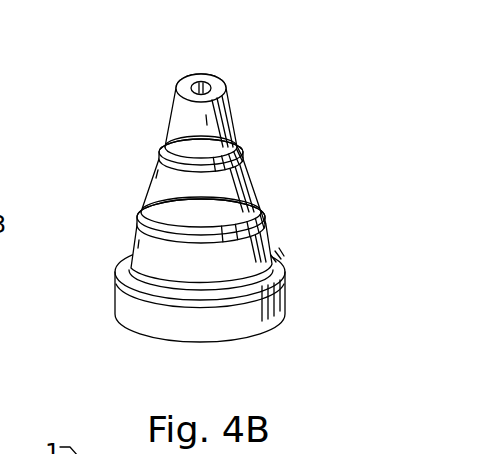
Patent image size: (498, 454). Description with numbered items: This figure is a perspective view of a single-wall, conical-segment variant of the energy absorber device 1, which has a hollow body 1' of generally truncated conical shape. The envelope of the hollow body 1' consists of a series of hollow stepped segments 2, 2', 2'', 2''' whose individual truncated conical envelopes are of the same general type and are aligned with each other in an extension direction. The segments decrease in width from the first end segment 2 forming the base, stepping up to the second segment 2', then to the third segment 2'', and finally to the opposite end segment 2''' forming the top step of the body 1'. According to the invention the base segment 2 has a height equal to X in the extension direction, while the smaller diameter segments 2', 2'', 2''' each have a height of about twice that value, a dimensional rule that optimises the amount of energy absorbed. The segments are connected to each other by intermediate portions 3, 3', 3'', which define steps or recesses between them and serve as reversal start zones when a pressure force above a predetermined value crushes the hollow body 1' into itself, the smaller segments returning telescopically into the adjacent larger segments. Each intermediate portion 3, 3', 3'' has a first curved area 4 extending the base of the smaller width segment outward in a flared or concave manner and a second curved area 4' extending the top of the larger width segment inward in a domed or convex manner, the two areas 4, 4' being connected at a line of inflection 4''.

The energy absorber device 1 is at (207, 171).
The hollow body 1' is at (218, 171).
The first end segment 2 is at (242, 293).
The second segment 2' is at (242, 236).
The third stepped segment 2'' is at (243, 174).
The opposite end segment 2''' is at (245, 103).
The intermediate portion 3 is at (265, 255).
The intermediate portion 3' is at (220, 208).
The intermediate portion 3'' is at (275, 137).
The first curved area 4 is at (149, 201).
The second curved area 4' is at (151, 227).
The line of inflection 4'' is at (151, 217).